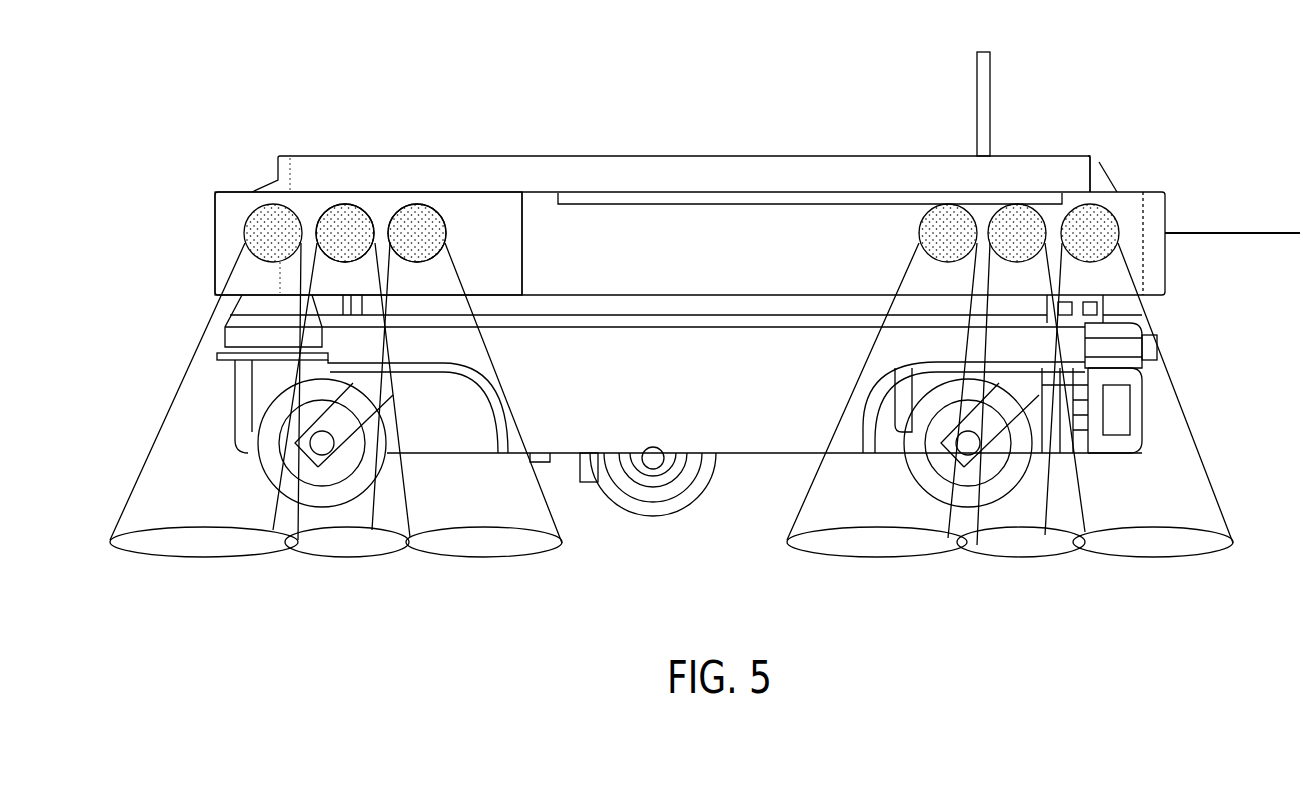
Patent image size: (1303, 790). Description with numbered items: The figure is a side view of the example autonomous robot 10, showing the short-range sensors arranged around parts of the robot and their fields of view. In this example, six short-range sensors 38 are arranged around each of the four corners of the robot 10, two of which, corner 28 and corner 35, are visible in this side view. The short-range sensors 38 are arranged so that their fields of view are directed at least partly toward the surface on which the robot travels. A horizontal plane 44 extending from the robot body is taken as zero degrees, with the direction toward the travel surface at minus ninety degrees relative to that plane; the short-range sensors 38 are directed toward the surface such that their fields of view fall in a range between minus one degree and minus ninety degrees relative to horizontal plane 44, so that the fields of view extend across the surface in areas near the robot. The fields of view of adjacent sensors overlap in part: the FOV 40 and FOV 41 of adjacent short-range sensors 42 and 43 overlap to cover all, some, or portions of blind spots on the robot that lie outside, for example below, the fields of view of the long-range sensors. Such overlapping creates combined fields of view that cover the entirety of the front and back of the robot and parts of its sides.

The robot 10 is at (650, 167).
The corner 28 is at (212, 187).
The corner 35 is at (1093, 156).
The short-range sensors 38 is at (232, 222).
The FOV 40 is at (353, 551).
The FOV 41 is at (477, 549).
The short-range sensor 42 is at (417, 204).
The short-range sensor 43 is at (345, 204).
The horizontal plane 44 is at (1206, 233).